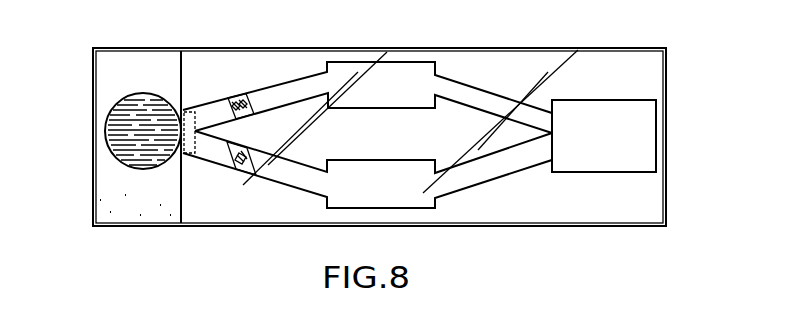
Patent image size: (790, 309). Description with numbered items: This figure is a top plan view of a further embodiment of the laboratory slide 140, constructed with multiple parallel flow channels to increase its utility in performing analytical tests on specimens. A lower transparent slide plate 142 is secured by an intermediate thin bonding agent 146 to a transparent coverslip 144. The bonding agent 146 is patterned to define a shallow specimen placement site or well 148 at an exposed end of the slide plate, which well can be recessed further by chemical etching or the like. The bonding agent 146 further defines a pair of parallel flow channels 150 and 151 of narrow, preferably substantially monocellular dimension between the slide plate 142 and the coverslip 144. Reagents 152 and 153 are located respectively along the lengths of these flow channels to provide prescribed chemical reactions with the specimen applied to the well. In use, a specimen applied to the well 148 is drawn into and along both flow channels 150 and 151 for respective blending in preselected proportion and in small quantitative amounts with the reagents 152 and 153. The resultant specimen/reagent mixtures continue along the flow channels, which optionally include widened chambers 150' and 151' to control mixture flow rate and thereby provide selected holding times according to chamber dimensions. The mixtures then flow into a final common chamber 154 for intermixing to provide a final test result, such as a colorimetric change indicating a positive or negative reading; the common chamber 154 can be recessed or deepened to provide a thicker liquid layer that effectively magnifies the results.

The laboratory slide 140 is at (676, 42).
The lower transparent slide plate 142 is at (150, 47).
The transparent coverslip 144 is at (535, 58).
The bonding agent 146 is at (148, 207).
The specimen placement site or well 148 is at (124, 120).
The flow channel 150 is at (285, 98).
The widened chamber 150' is at (454, 102).
The flow channel 151 is at (256, 194).
The widened chamber 151' is at (441, 195).
The reagent 152 is at (242, 100).
The reagent 153 is at (238, 162).
The final common chamber 154 is at (643, 132).